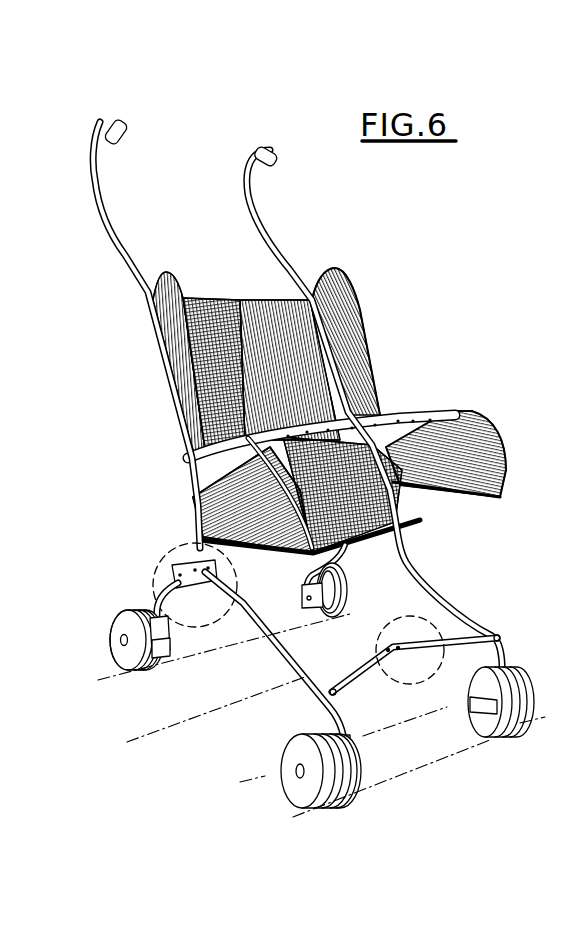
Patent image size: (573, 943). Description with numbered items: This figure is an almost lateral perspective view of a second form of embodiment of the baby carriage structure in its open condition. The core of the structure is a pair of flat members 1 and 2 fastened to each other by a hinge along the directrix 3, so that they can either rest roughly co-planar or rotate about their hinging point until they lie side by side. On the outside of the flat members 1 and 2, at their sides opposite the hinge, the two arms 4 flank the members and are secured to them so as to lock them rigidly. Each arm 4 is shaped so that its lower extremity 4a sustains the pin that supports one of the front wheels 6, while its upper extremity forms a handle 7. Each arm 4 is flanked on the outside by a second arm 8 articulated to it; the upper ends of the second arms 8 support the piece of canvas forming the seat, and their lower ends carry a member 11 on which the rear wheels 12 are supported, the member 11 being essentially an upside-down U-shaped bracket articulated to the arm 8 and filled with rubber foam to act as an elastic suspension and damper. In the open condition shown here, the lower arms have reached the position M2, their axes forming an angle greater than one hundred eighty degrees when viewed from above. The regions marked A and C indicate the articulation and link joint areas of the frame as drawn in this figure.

The flat member 1 is at (205, 292).
The flat member 2 is at (266, 296).
The directrix 3 is at (233, 292).
The arm 4 is at (237, 627).
The lower extremity of arm 4a is at (347, 745).
The front wheel 6 is at (316, 805).
The handle 7 is at (252, 150).
The second arm 8 is at (158, 605).
The member 11 is at (172, 660).
The rear wheel 12 is at (116, 657).
The hinge joint A is at (160, 550).
The link joint C is at (440, 632).
The position M2 is at (372, 695).